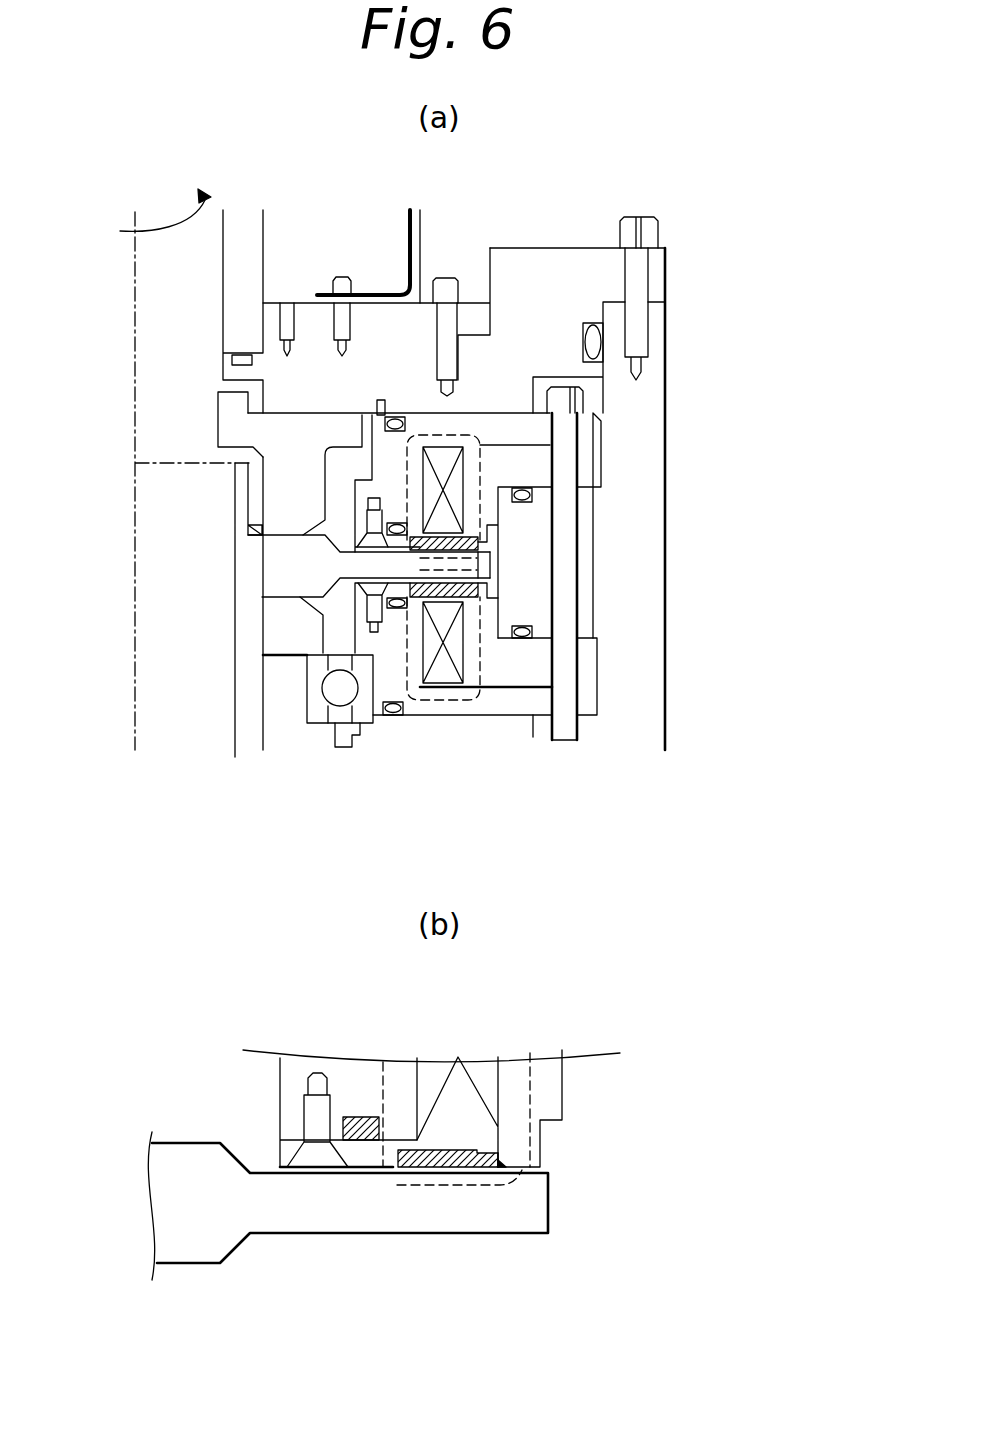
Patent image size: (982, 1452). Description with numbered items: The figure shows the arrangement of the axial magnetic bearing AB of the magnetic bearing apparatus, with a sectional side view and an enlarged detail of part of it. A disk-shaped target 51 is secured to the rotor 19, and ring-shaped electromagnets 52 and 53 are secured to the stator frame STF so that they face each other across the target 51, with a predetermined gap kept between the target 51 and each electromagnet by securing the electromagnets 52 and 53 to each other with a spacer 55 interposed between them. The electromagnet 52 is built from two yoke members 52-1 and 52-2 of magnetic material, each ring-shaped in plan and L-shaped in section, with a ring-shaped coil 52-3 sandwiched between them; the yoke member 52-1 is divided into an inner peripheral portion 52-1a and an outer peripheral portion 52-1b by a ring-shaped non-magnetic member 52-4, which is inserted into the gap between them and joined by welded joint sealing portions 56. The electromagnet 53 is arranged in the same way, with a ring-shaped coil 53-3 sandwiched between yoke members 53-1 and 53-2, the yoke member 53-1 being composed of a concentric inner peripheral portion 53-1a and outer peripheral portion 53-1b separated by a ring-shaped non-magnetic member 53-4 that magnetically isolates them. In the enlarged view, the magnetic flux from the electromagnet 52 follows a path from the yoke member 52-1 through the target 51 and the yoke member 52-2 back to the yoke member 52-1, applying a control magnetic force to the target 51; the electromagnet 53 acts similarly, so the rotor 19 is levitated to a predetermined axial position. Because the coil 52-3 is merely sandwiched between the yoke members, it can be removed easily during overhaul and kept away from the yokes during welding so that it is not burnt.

The rotor 19 is at (210, 257).
The target 51 is at (283, 572).
The electromagnet 52 is at (540, 457).
The yoke member 52-1 is at (517, 476).
The inner peripheral portion 52-1a is at (353, 1153).
The outer peripheral portion 52-1b is at (527, 1163).
The yoke member 52-2 is at (470, 422).
The coil 52-3 is at (445, 482).
The non-magnetic member 52-4 is at (483, 542).
The electromagnet 53 is at (540, 658).
The yoke member 53-1 is at (510, 670).
The inner peripheral portion 53-1a is at (383, 595).
The outer peripheral portion 53-1b is at (496, 608).
The yoke member 53-2 is at (497, 700).
The coil 53-3 is at (440, 688).
The non-magnetic member 53-4 is at (483, 585).
The spacer 55 is at (537, 557).
The joint sealing portion 56 is at (397, 1173).
The axial magnetic bearing AB is at (667, 360).
The stator frame STF is at (637, 707).